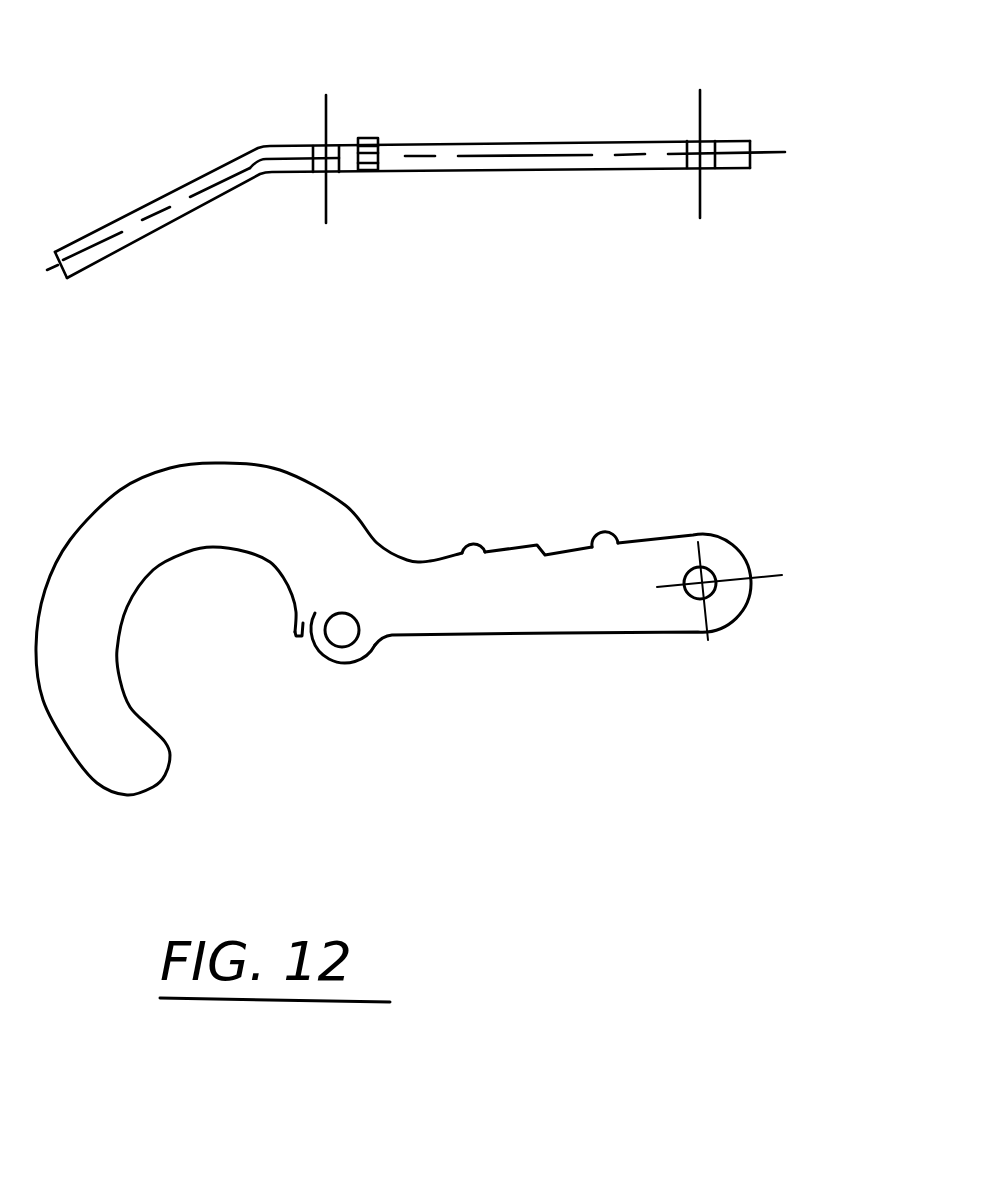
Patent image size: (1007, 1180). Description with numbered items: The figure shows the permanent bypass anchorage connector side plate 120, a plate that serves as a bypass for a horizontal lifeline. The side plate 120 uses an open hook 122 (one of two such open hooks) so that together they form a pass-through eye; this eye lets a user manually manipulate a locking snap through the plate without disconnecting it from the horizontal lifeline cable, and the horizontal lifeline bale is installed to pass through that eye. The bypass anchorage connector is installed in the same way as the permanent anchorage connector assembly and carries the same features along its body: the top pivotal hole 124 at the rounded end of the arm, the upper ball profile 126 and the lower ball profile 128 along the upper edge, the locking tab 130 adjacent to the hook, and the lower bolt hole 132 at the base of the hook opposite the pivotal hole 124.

The permanent bypass anchorage connector side plate 120 is at (347, 503).
The open hook 122 is at (162, 570).
The top pivotal hole 124 is at (712, 570).
The upper ball profile 126 is at (613, 532).
The lower ball profile 128 is at (478, 533).
The locking tab 130 is at (303, 638).
The lower bolt hole 132 is at (353, 635).